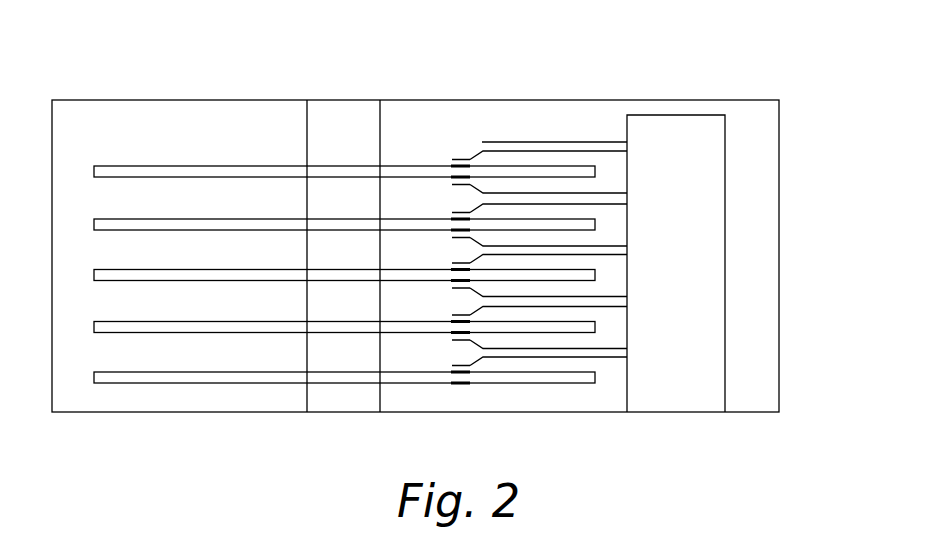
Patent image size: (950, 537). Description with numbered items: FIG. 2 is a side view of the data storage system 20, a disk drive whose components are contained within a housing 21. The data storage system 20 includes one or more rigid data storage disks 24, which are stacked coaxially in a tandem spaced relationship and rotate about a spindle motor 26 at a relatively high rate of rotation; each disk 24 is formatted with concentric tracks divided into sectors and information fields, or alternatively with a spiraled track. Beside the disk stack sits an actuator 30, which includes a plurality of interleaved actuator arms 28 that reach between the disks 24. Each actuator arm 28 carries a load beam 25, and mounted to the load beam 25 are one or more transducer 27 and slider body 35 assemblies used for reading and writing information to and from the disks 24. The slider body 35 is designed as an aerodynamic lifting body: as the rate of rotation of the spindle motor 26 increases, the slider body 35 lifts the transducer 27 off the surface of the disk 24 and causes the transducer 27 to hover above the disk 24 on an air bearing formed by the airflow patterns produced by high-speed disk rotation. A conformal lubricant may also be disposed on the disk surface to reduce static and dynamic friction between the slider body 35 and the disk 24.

The data storage system 20 is at (669, 74).
The housing 21 is at (779, 263).
The disk 24 is at (94, 170).
The load beam 25 is at (472, 158).
The spindle motor 26 is at (342, 403).
The transducer 27 is at (453, 167).
The actuator arm 28 is at (571, 141).
The actuator 30 is at (678, 403).
The slider body 35 is at (453, 158).